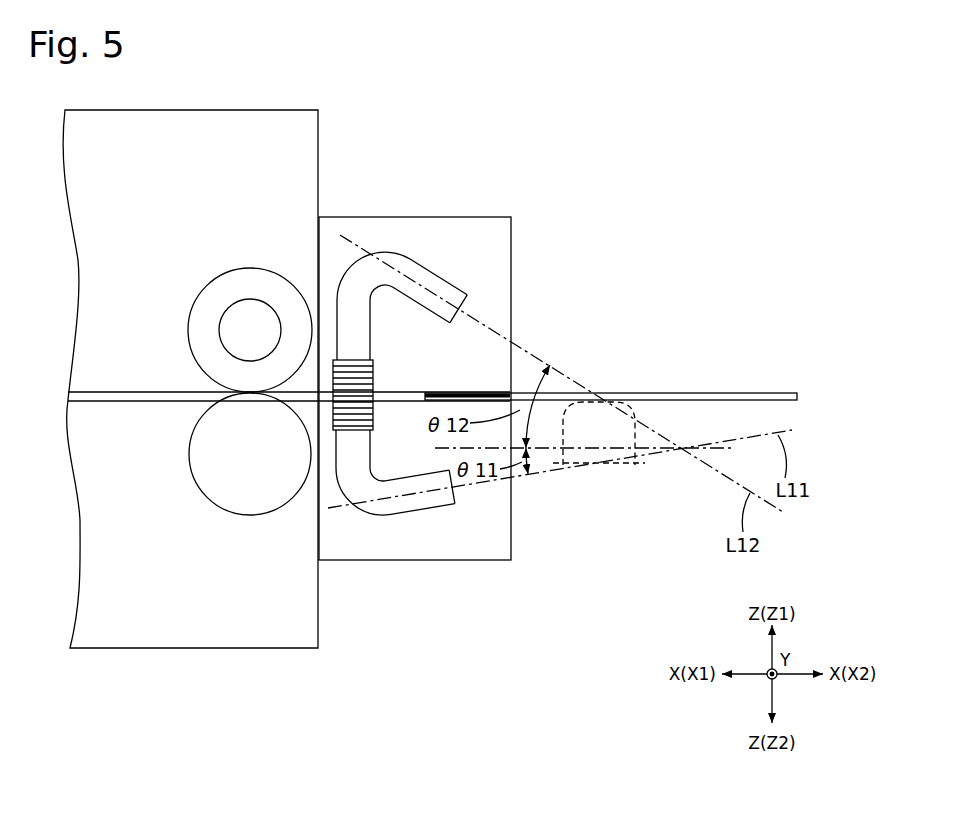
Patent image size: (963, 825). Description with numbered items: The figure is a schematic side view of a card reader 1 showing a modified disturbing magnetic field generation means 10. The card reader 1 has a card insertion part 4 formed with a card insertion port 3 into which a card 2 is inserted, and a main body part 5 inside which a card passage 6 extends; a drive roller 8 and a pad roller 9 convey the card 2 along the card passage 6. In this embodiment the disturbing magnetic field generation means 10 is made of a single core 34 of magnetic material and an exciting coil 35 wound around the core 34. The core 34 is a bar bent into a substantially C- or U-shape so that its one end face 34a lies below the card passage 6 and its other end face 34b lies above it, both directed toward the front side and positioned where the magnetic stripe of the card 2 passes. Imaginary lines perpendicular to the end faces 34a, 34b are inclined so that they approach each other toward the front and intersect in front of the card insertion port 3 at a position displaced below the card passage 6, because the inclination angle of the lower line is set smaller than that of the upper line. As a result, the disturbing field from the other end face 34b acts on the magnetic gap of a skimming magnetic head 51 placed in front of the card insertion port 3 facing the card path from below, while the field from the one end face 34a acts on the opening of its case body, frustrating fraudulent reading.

The card reader 1 is at (596, 163).
The card 2 is at (712, 393).
The card insertion port 3 is at (517, 390).
The card insertion part 4 is at (483, 217).
The main body part 5 is at (318, 604).
The card passage 6 is at (131, 392).
The drive roller 8 is at (250, 268).
The pad roller 9 is at (250, 515).
The disturbing magnetic field generation means 10 is at (378, 232).
The core 34 is at (442, 280).
The one end face 34a is at (456, 496).
The other end face 34b is at (470, 300).
The exciting coil 35 is at (373, 375).
The skimming magnetic head 51 is at (625, 464).